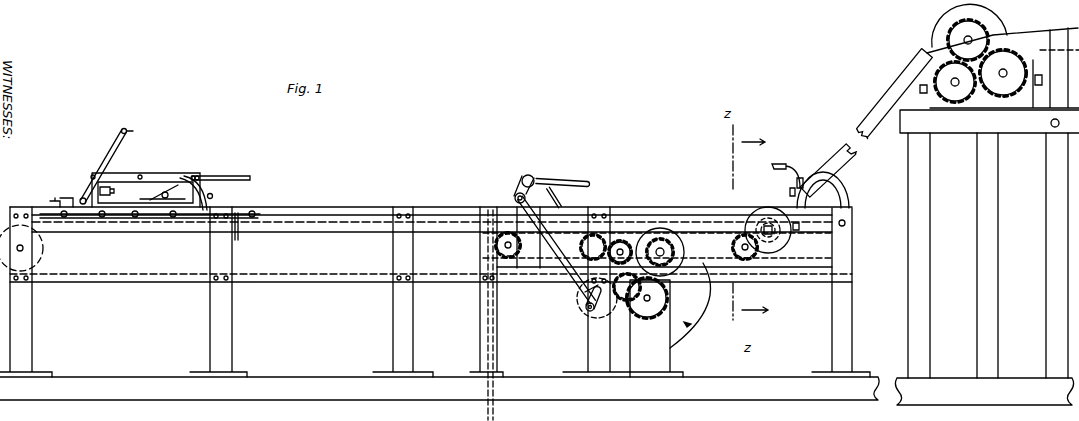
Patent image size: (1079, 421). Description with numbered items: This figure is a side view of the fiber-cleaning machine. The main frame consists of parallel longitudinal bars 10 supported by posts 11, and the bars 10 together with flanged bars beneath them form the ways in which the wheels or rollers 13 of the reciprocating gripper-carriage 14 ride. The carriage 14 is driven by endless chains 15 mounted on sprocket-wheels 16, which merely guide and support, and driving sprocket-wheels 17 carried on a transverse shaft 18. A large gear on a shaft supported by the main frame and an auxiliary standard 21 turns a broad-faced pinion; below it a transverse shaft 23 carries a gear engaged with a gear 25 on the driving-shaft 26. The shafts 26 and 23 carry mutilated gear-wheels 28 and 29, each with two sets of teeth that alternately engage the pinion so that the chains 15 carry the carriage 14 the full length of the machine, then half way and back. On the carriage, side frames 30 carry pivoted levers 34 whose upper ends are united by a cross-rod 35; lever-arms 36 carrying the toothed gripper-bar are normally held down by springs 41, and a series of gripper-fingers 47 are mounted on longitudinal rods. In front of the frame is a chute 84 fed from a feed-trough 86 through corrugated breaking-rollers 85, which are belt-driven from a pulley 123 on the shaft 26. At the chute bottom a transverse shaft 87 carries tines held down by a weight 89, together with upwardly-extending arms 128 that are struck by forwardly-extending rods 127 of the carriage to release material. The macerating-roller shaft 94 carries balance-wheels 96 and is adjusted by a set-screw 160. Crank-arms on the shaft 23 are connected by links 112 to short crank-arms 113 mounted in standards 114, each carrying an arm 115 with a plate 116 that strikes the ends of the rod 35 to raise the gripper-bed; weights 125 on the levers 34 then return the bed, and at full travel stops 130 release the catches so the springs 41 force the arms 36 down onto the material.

The longitudinal bars 10 is at (352, 207).
The posts 11 is at (435, 313).
The wheels or rollers 13 is at (129, 224).
The reciprocating gripper-carriage 14 is at (152, 184).
The endless chains 15 is at (431, 269).
The sprocket-wheels 16 is at (42, 255).
The sprocket-wheels 17 is at (684, 250).
The transverse shaft 18 is at (663, 255).
The auxiliary frame or standard 21 is at (656, 328).
The transverse shaft 23 is at (584, 293).
The gear 25 is at (622, 305).
The driving-shaft 26 is at (656, 350).
The mutilated gear-wheel 28 is at (652, 312).
The mutilated gear-wheel 29 is at (585, 306).
The side frames 30 is at (182, 178).
The levers 34 is at (102, 164).
The cross-rod 35 is at (133, 131).
The lever-arms 36 is at (164, 194).
The springs 41 is at (160, 196).
The gripper-finger 47 is at (241, 246).
The chute 84 is at (866, 123).
The breaking-rollers 85 is at (981, 61).
The feed-trough 86 is at (989, 191).
The transverse shaft 87 is at (838, 192).
The weight 89 is at (789, 190).
The shaft 94 is at (771, 236).
The balance-wheels 96 is at (770, 252).
The link 112 is at (515, 200).
The short crank-arm 113 is at (520, 190).
The standards 114 is at (532, 178).
The arm 115 is at (561, 184).
The plate 116 is at (586, 183).
The pulley 123 is at (690, 313).
The weights 125 is at (114, 190).
The forwardly-extending rods 127 is at (227, 170).
The upwardly-extending arms 128 is at (800, 178).
The stops 130 is at (781, 168).
The set-screw 160 is at (800, 227).